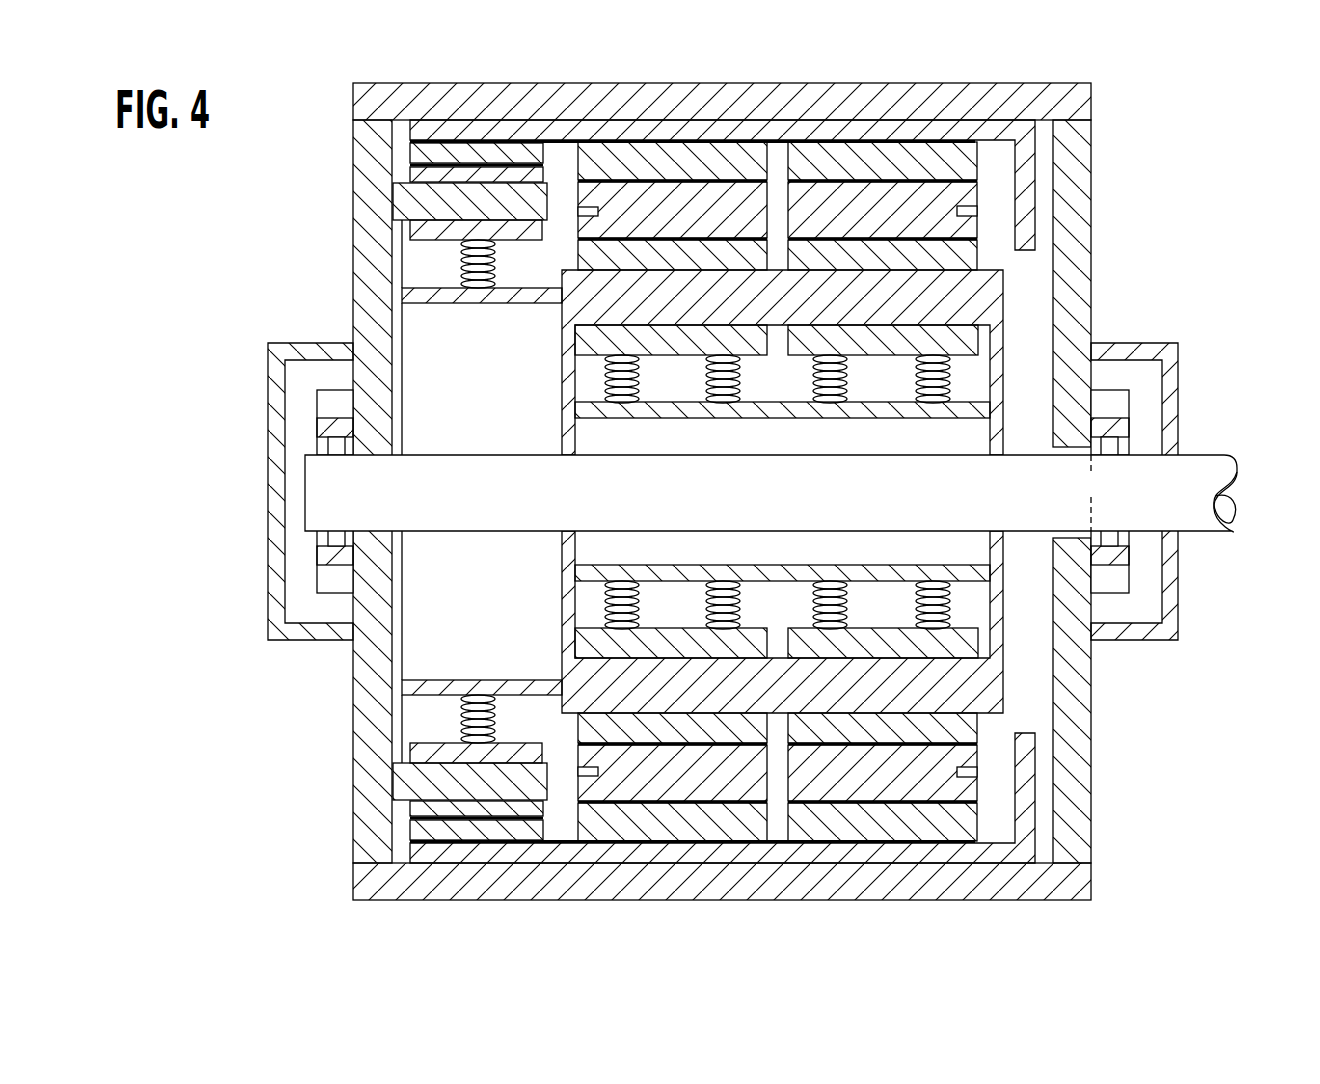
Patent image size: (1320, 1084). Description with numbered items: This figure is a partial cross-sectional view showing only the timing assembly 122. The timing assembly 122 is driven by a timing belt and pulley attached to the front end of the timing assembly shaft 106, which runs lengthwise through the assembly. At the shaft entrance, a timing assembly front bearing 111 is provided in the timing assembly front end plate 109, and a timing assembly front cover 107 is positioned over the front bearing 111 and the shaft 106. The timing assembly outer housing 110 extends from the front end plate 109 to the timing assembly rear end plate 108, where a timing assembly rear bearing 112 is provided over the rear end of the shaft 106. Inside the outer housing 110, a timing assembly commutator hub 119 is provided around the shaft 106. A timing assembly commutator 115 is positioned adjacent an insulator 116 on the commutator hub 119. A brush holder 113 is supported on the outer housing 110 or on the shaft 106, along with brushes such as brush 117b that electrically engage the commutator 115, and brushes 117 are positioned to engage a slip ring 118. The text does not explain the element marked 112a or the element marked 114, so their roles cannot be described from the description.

The timing assembly shaft 106 is at (1210, 492).
The timing assembly front cover 107 is at (1178, 565).
The timing assembly rear end plate 108 is at (378, 800).
The timing assembly front end plate 109 is at (1075, 206).
The timing assembly outer housing 110 is at (400, 97).
The timing assembly front bearing 111 is at (1117, 400).
The timing assembly rear bearing 112 is at (330, 400).
The plate 112a is at (769, 634).
The brush holder 113 is at (605, 690).
The spring-loaded plate 114 is at (600, 351).
The timing assembly commutator 115 is at (630, 762).
The insulator 116 is at (650, 825).
The brushes 117 is at (437, 232).
The brush 117b is at (876, 632).
The slip ring 118 is at (522, 830).
The timing assembly commutator hub 119 is at (1025, 765).
The timing assembly 122 is at (255, 233).